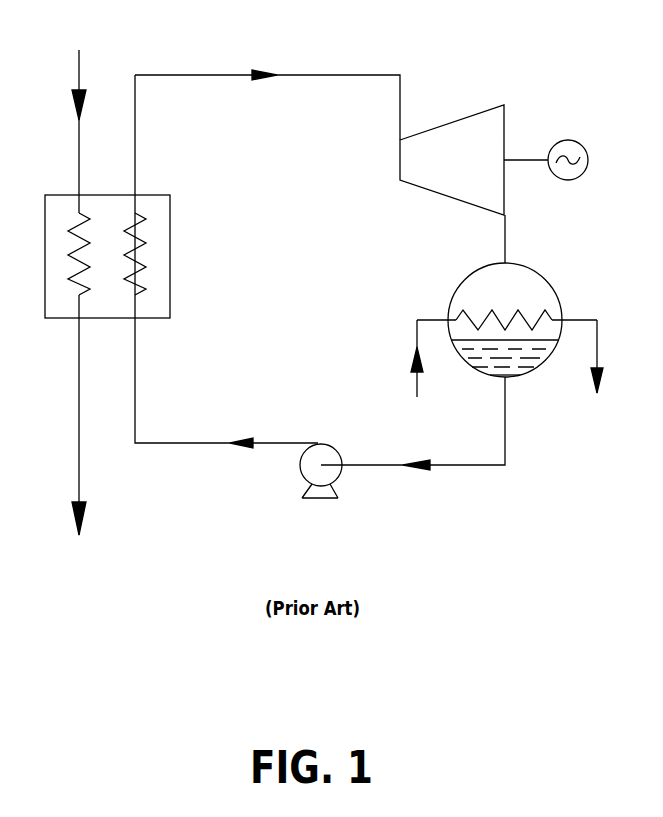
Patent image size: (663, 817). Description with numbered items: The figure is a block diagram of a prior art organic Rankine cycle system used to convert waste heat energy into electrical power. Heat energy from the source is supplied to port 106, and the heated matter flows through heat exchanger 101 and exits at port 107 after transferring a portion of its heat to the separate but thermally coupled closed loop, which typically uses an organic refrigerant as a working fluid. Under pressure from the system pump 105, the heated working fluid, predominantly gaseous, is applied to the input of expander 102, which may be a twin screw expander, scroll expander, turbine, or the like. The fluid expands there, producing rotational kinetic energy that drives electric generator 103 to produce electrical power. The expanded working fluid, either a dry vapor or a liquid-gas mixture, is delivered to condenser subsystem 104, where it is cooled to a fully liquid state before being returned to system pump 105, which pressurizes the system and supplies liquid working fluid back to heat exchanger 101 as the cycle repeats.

The heat exchanger 101 is at (132, 256).
The expander 102 is at (452, 160).
The electric generator 103 is at (569, 160).
The condenser subsystem 104 is at (507, 330).
The system pump 105 is at (321, 490).
The port 106 is at (60, 131).
The port 107 is at (60, 415).